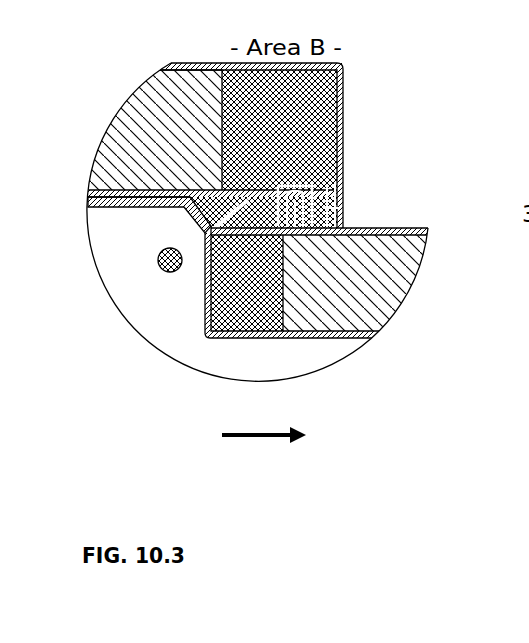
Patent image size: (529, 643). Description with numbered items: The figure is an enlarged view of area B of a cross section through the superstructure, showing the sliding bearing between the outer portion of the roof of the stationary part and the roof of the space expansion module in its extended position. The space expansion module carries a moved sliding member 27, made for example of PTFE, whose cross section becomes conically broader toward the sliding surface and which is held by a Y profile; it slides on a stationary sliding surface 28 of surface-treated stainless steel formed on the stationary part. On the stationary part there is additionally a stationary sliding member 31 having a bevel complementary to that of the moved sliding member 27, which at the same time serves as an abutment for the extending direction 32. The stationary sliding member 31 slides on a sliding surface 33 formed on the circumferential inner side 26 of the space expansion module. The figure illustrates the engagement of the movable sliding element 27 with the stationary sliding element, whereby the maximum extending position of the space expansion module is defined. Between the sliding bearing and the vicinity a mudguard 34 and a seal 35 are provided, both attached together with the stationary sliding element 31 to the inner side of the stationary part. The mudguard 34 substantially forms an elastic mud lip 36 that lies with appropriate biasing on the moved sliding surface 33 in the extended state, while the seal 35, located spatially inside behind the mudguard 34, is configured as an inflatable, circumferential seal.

The circumferential inner edge 26 is at (203, 297).
The moved sliding member 27 is at (183, 180).
The stationary sliding surface 28 is at (152, 208).
The stationary sliding member 31 is at (343, 113).
The extending direction 32 is at (273, 439).
The sliding surface 33 is at (388, 230).
The mudguard 34 is at (340, 187).
The seal 35 is at (341, 150).
The elastic mud lip 36 is at (340, 223).